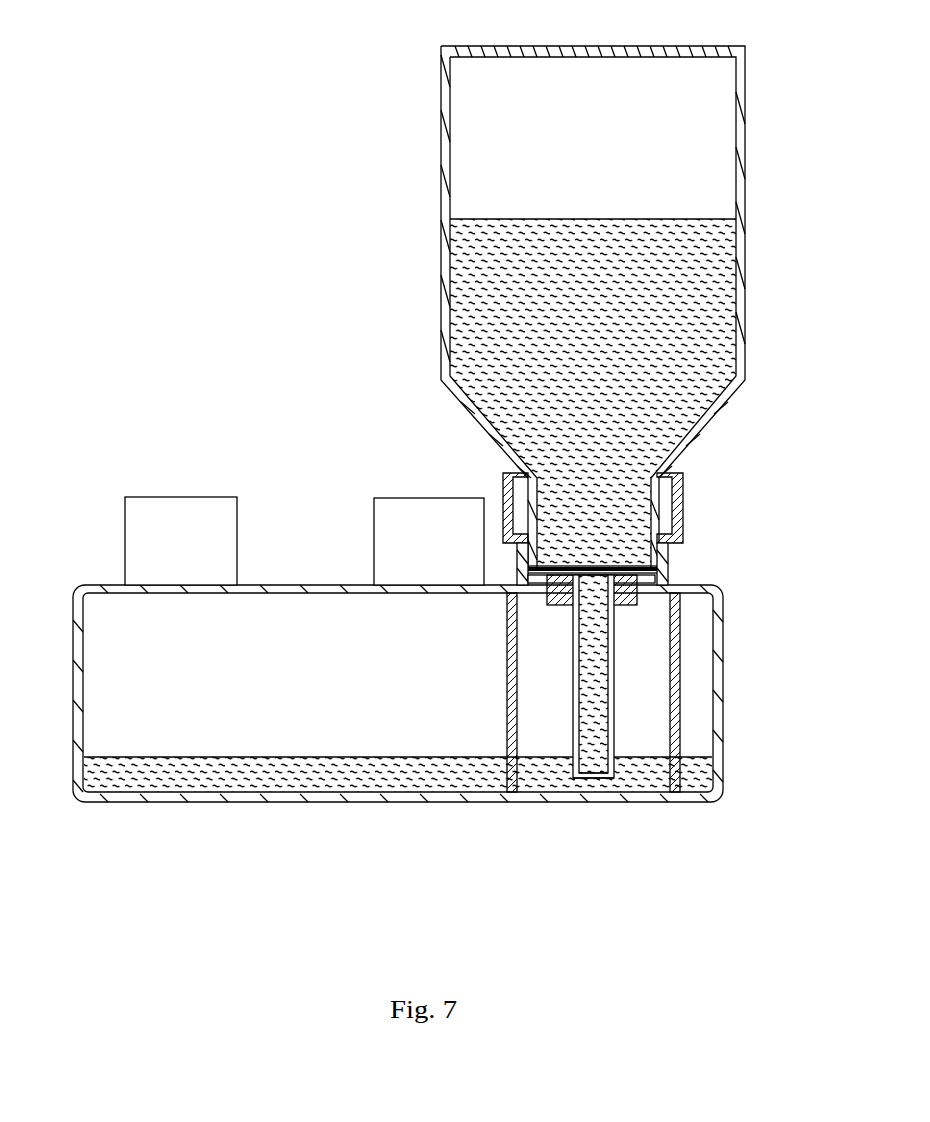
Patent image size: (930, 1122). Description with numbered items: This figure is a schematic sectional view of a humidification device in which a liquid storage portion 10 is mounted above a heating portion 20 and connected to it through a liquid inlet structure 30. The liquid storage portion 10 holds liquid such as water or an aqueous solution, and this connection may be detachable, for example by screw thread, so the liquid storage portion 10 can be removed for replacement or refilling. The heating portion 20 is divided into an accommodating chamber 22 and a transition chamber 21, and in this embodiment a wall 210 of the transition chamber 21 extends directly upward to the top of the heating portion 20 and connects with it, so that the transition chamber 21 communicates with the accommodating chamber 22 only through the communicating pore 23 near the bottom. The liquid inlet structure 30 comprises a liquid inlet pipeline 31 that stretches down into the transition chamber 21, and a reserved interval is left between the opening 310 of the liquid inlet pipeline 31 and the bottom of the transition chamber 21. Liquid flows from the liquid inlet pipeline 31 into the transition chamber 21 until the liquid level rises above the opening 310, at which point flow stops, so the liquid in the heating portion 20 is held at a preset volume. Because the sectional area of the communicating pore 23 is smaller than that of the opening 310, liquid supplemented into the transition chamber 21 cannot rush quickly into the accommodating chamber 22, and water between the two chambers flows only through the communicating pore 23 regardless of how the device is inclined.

The liquid storage portion 10 is at (707, 173).
The heating portion 20 is at (755, 633).
The transition chamber 21 is at (528, 723).
The accommodating chamber 22 is at (117, 676).
The communicating pore 23 is at (672, 783).
The wall 210 is at (505, 628).
The liquid inlet structure 30 is at (683, 507).
The liquid inlet pipeline 31 is at (615, 708).
The opening 310 is at (590, 763).